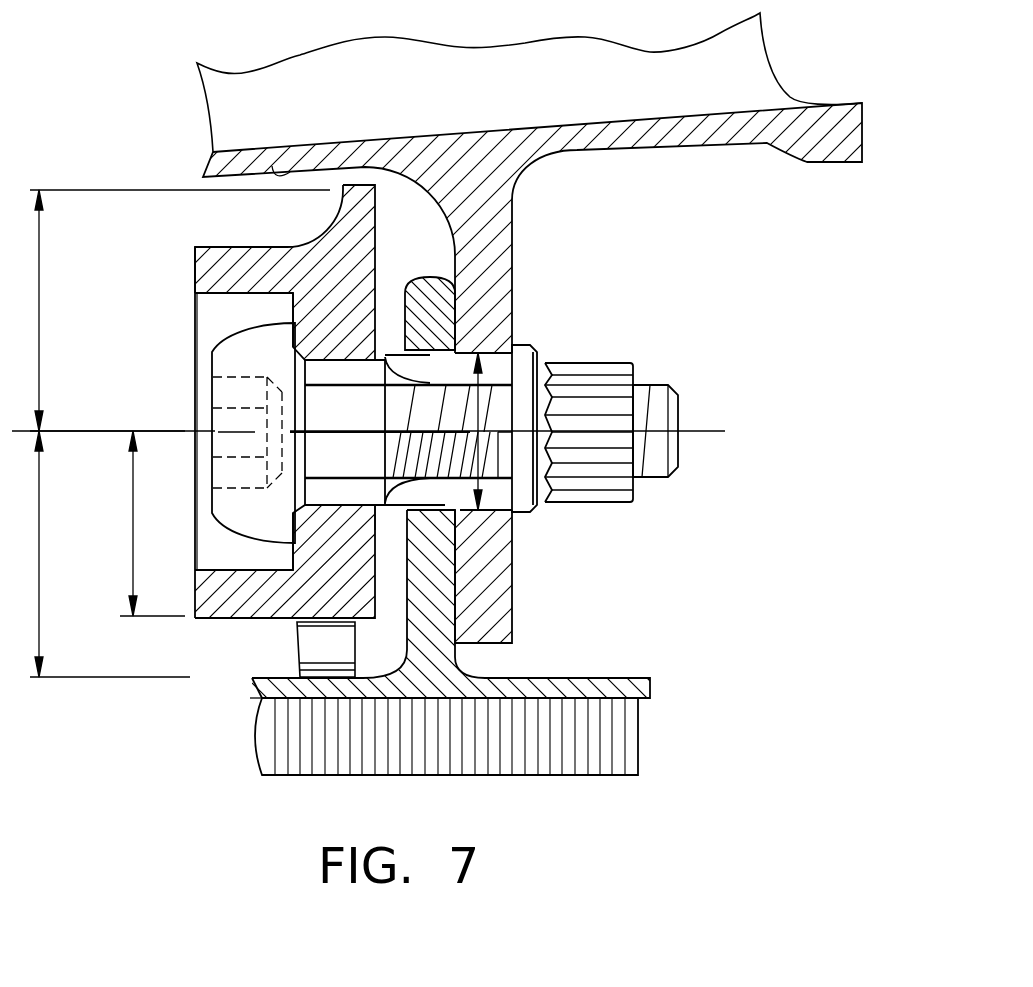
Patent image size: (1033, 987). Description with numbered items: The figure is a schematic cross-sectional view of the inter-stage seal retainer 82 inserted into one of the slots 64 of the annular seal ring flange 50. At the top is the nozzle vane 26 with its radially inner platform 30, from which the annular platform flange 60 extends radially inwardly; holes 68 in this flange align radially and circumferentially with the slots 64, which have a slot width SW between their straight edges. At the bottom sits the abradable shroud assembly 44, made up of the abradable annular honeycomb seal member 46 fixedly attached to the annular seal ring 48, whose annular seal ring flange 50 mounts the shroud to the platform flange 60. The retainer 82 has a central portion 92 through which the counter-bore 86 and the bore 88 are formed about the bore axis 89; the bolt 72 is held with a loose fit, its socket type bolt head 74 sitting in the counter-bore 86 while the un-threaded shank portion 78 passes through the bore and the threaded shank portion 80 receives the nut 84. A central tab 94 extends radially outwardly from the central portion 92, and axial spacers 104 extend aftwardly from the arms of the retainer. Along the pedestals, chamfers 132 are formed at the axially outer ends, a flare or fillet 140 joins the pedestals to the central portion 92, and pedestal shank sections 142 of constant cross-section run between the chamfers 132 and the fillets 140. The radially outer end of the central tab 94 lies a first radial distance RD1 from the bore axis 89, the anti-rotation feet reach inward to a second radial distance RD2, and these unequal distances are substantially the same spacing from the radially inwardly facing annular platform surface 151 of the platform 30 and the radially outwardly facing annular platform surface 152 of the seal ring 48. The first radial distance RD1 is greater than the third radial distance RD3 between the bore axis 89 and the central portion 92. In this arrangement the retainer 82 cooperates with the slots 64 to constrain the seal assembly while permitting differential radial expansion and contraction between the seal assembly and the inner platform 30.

The nozzle vane 26 is at (388, 89).
The radially inner platform 30 is at (542, 128).
The abradable shroud assembly 44 is at (230, 761).
The abradable annular honeycomb seal member 46 is at (563, 775).
The annular seal ring 48 is at (653, 683).
The annular seal ring flange 50 is at (458, 648).
The annular platform flange 60 is at (512, 263).
The slots 64 is at (425, 385).
The holes 68 is at (517, 380).
The bolt 72 is at (355, 508).
The socket type bolt head 74 is at (212, 465).
The un-threaded shank portion 78 is at (319, 423).
The threaded shank portion 80 is at (652, 398).
The inter-stage seal retainer 82 is at (278, 245).
The nut 84 is at (607, 502).
The counter-bore 86 is at (232, 293).
The bore 88 is at (353, 382).
The bore axis 89 is at (708, 428).
The central portion 92 is at (202, 245).
The central tab 94 is at (362, 193).
The axial spacers 104 is at (390, 343).
The chamfers 132 is at (466, 352).
The flare or fillet 140 is at (383, 547).
The pedestal shank sections 142 is at (440, 540).
The radially inwardly facing annular platform surface 151 is at (273, 166).
The radially outwardly facing annular platform surface 152 is at (260, 677).
The slot width SW is at (520, 495).
The first radial distance RD1 is at (40, 358).
The second radial distance RD2 is at (40, 572).
The third radial distance RD3 is at (132, 520).